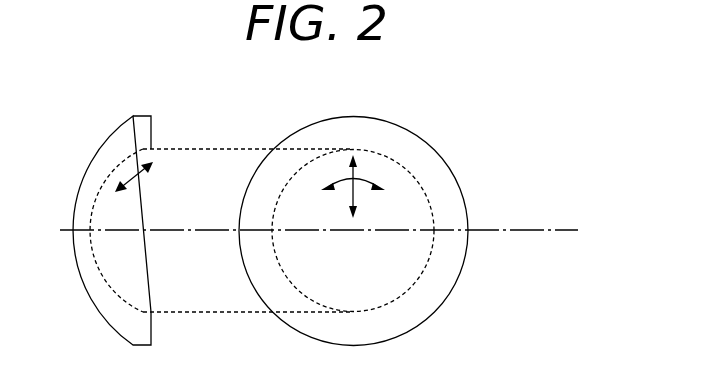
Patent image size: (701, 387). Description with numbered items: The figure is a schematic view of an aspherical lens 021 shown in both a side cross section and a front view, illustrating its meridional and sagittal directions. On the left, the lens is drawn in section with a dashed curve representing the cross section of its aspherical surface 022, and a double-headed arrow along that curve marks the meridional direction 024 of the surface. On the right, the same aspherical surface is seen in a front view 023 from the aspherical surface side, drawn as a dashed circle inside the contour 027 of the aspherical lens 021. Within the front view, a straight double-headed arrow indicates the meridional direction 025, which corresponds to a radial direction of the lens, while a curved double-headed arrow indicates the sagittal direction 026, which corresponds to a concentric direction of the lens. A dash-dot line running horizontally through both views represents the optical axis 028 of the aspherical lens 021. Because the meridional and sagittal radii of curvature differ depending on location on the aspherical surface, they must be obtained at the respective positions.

The aspherical lens 021 is at (147, 116).
The cross section of aspherical surface 022 is at (148, 152).
The front view of aspherical surface 023 is at (425, 188).
The meridional direction 024 is at (138, 180).
The meridional direction 025 is at (350, 160).
The sagittal direction 026 is at (384, 183).
The contour of aspherical lens 027 is at (420, 323).
The optical axis 028 is at (510, 231).